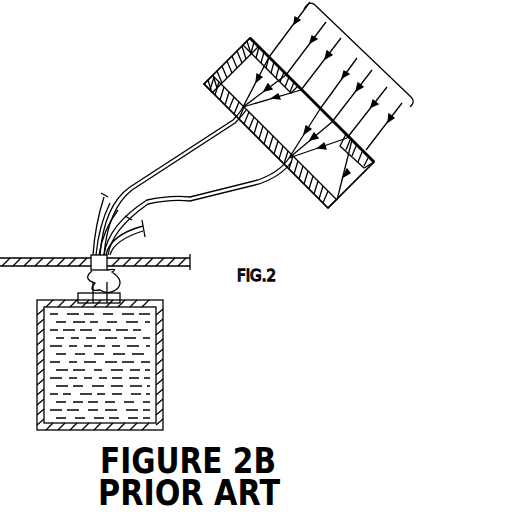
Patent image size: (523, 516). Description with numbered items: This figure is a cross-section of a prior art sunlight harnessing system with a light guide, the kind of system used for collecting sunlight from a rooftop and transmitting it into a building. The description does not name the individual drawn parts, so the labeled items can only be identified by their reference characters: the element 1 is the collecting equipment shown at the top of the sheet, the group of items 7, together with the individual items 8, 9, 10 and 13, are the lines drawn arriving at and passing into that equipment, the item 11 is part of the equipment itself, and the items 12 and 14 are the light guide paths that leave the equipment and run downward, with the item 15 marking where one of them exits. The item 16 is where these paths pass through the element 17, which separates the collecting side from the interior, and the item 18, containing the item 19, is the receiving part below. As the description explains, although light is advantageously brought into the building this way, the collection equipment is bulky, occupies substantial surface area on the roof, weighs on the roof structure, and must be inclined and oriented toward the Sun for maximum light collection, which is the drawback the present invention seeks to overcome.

The solar collector panel 1 is at (241, 33).
The incident sunlight rays 7 is at (351, 80).
The light ray 8 is at (290, 30).
The light ray 9 is at (308, 44).
The light ray 10 is at (323, 60).
The transparent cover of panel 11 is at (259, 44).
The optical fiber 12 is at (212, 138).
The light ray 13 is at (357, 98).
The optical fiber 14 is at (257, 182).
The panel outlet 15 is at (325, 200).
The fiber conduit coupling 16 is at (116, 272).
The roof wall 17 is at (57, 259).
The tank 18 is at (38, 333).
The liquid 19 is at (150, 352).